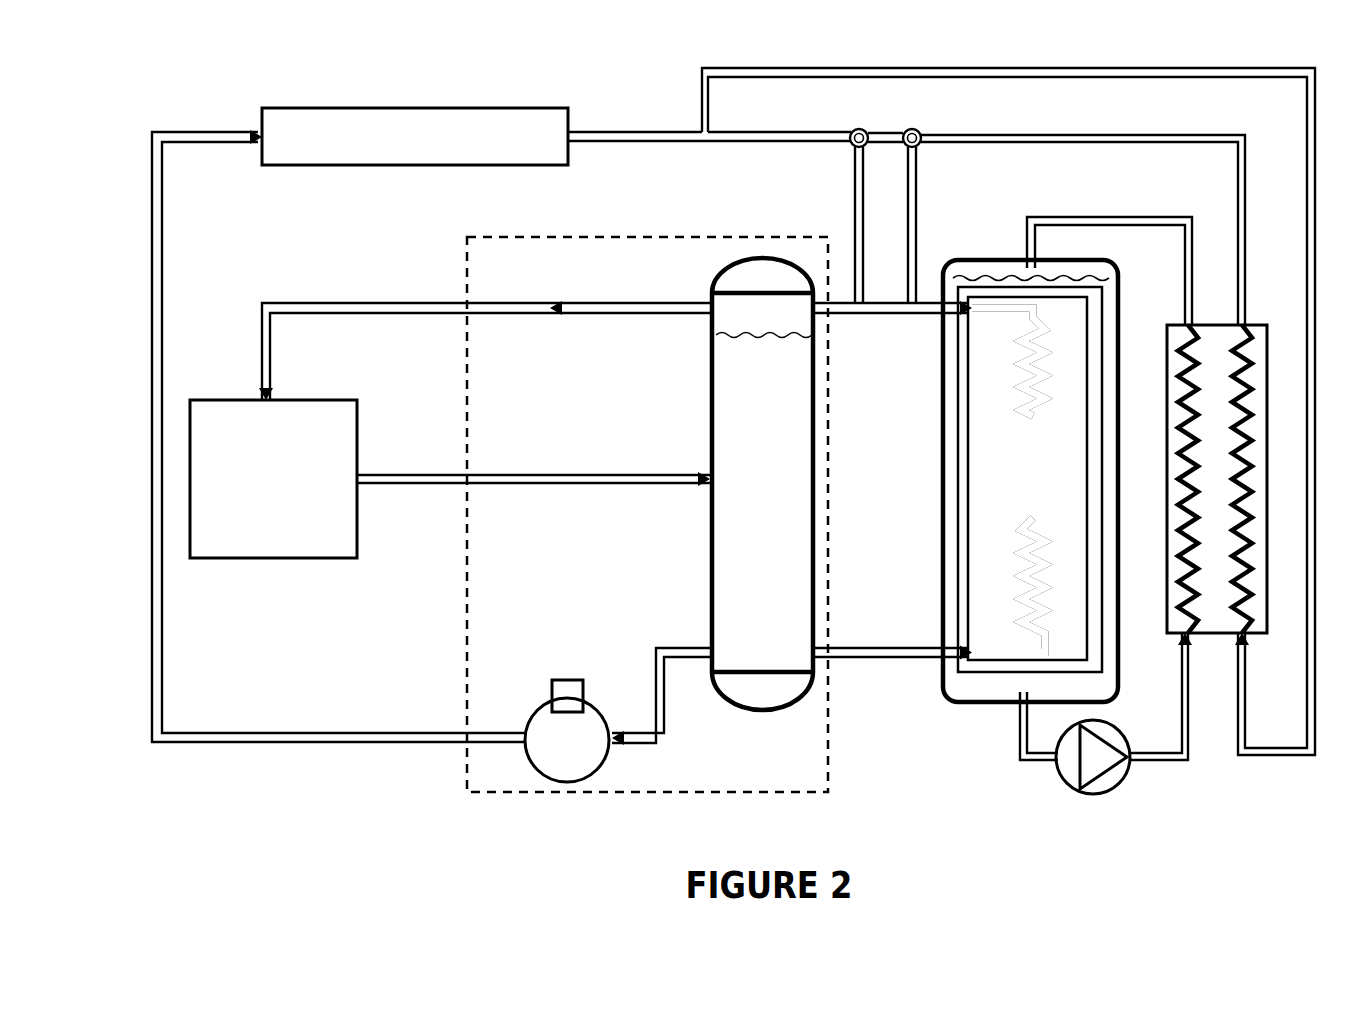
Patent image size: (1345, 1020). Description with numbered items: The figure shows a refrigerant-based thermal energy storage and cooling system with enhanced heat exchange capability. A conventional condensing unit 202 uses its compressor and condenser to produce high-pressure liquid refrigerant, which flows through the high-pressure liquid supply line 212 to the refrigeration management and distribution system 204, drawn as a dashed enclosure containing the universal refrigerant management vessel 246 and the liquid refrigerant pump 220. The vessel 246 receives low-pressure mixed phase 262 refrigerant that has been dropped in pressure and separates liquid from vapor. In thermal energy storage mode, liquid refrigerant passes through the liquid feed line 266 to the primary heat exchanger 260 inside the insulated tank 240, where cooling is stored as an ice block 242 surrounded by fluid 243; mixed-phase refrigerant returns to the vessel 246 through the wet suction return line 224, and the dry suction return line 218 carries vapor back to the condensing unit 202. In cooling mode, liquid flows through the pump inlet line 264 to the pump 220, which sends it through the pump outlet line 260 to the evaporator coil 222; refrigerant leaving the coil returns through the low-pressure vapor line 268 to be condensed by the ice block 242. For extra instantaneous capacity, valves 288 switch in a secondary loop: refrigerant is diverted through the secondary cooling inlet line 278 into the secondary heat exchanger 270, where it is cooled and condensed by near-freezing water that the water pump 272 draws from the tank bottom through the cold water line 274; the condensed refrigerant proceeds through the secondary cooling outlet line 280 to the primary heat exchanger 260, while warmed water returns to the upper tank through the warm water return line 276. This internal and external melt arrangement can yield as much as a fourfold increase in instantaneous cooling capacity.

The condensing unit 202 is at (310, 558).
The refrigeration management and distribution system 204 is at (467, 792).
The high-pressure liquid supply line 212 is at (452, 475).
The dry suction return line 218 is at (402, 303).
The liquid refrigerant pump 220 is at (532, 707).
The evaporator coil 222 is at (505, 108).
The wet suction return line 224 is at (925, 313).
The insulated tank 240 is at (943, 663).
The ice block 242 is at (980, 673).
The fluid 243 is at (1110, 293).
The universal refrigerant management vessel 246 is at (710, 362).
The primary heat exchanger 260 is at (152, 742).
The low-pressure mixed phase refrigerant 262 is at (610, 488).
The pump inlet line 264 is at (664, 718).
The liquid feed line 266 is at (913, 647).
The low-pressure vapor line 268 is at (595, 142).
The secondary heat exchanger 270 is at (1268, 343).
The water pump 272 is at (1107, 792).
The cold water line 274 is at (1172, 760).
The warm water return line 276 is at (1195, 217).
The secondary cooling inlet line 278 is at (943, 136).
The secondary cooling outlet line 280 is at (706, 68).
The valves 288 is at (910, 128).